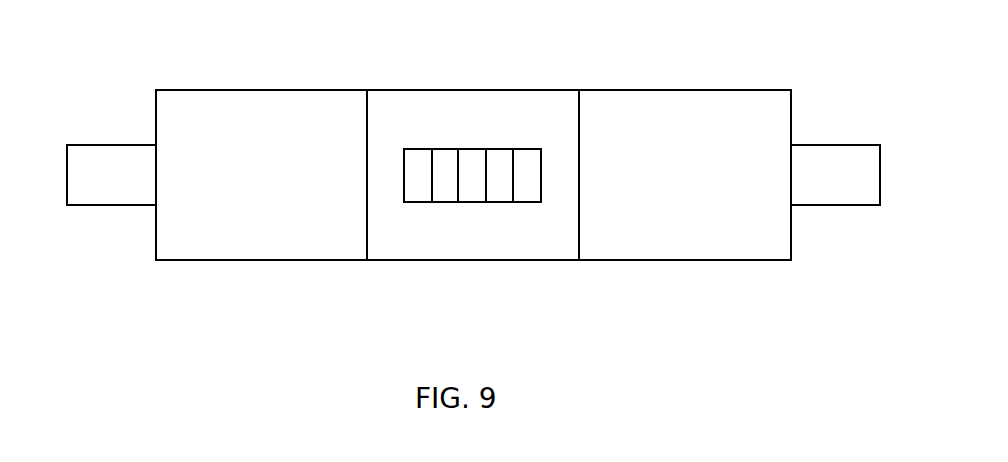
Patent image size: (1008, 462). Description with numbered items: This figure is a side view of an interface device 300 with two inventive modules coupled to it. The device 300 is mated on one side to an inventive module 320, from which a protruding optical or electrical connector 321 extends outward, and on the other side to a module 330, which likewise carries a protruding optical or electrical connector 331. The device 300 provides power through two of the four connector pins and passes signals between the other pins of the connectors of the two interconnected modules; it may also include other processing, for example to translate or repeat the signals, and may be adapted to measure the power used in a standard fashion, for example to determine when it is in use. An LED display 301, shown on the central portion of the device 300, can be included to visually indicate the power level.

The device 300 is at (473, 88).
The LED display 301 is at (506, 215).
The inventive module 320 is at (285, 88).
The protruding optical or electrical connector 321 is at (110, 148).
The module 330 is at (661, 88).
The protruding optical or electrical connector 331 is at (828, 148).